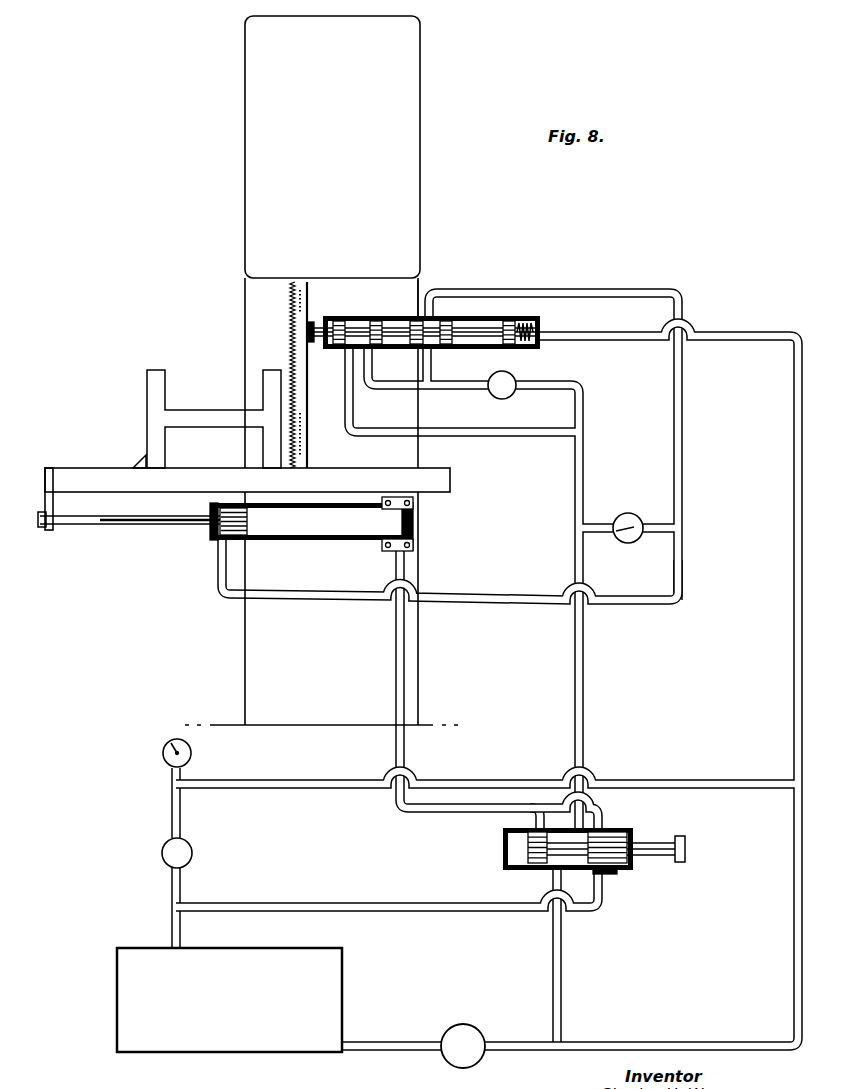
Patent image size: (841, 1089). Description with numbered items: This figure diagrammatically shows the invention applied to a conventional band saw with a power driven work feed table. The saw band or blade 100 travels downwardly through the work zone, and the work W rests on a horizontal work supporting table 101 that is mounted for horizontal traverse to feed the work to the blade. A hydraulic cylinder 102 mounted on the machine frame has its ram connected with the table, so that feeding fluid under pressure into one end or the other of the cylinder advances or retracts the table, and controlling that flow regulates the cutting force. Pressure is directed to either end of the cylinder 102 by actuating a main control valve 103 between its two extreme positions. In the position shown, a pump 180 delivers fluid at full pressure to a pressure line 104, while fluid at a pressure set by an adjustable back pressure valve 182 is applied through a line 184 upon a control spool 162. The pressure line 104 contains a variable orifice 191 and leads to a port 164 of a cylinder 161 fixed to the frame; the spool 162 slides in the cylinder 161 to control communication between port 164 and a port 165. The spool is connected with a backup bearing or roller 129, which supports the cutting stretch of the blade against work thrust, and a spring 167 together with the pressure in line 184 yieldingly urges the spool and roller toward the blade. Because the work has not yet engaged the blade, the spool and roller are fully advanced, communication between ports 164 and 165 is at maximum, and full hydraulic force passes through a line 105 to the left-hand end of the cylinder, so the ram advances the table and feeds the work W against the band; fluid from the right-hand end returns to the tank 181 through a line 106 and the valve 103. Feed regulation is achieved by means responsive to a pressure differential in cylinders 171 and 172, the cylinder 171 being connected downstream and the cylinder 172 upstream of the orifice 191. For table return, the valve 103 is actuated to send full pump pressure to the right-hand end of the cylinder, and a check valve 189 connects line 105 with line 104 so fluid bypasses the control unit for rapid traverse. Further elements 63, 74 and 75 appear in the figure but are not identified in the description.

The work W is at (204, 410).
The valve spool 63 is at (440, 320).
The port 74 is at (370, 350).
The port 75 is at (341, 348).
The saw band or blade 100 is at (290, 300).
The work supporting table 101 is at (103, 467).
The hydraulic cylinder 102 is at (327, 541).
The main control valve 103 is at (161, 526).
The pressure line 104 is at (584, 632).
The line 105 is at (343, 601).
The line 106 is at (404, 753).
The backup bearing or roller 129 is at (319, 311).
The cylinder 161 is at (447, 320).
The control spool 162 is at (418, 286).
The port 164 is at (432, 350).
The port 165 is at (428, 290).
The spring 167 is at (542, 325).
The cylinder 171 is at (372, 319).
The cylinder 172 is at (344, 319).
The pump 180 is at (475, 1025).
The tank 181 is at (343, 985).
The adjustable back pressure valve 182 is at (193, 853).
The line 184 is at (738, 336).
The check valve 189 is at (624, 513).
The variable orifice 191 is at (509, 396).